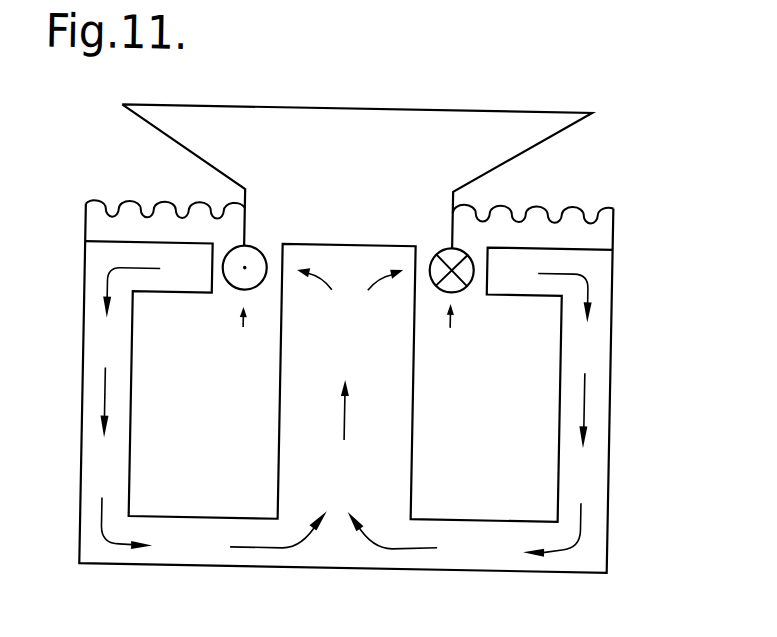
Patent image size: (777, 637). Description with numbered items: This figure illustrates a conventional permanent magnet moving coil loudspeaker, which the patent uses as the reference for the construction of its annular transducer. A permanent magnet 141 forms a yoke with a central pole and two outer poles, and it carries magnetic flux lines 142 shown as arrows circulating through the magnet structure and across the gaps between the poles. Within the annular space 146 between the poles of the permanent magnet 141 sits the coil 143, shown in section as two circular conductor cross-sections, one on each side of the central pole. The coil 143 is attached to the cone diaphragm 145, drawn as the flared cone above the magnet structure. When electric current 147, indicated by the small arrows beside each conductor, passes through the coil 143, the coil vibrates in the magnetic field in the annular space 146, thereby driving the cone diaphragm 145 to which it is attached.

The permanent magnet 141 is at (598, 358).
The flux lines 142 is at (285, 549).
The coil 143 is at (250, 245).
The cone diaphragm 145 is at (511, 154).
The annular space 146 is at (215, 283).
The electric current 147 is at (257, 334).